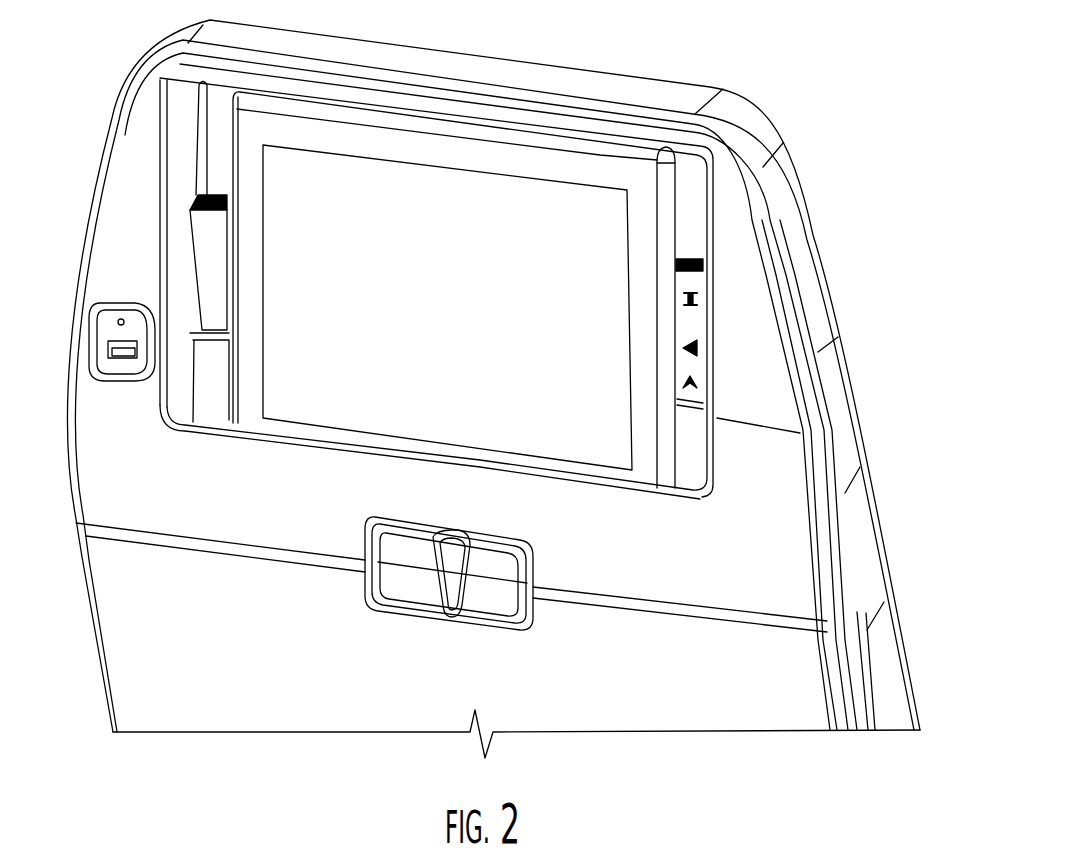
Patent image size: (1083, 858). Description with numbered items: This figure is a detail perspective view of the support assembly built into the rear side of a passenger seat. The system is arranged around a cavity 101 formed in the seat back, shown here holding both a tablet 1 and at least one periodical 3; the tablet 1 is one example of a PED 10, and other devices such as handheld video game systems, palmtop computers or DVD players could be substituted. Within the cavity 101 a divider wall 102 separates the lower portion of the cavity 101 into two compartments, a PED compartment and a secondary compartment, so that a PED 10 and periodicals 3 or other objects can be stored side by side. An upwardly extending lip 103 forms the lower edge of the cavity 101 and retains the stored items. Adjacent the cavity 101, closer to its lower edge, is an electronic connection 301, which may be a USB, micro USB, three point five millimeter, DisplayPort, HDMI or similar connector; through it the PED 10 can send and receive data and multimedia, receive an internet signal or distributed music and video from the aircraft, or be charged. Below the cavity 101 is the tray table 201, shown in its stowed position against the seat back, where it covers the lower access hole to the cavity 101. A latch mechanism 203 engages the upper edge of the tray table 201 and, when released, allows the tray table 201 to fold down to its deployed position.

The tablet 1 is at (515, 197).
The PED 10 is at (575, 200).
The cavity 101 is at (210, 138).
The divider wall 102 is at (213, 352).
The upwardly extending lip 103 is at (290, 452).
The periodical 3 is at (206, 230).
The electronic connection 301 is at (124, 368).
The tray table 201 is at (267, 653).
The latch mechanism 203 is at (447, 597).